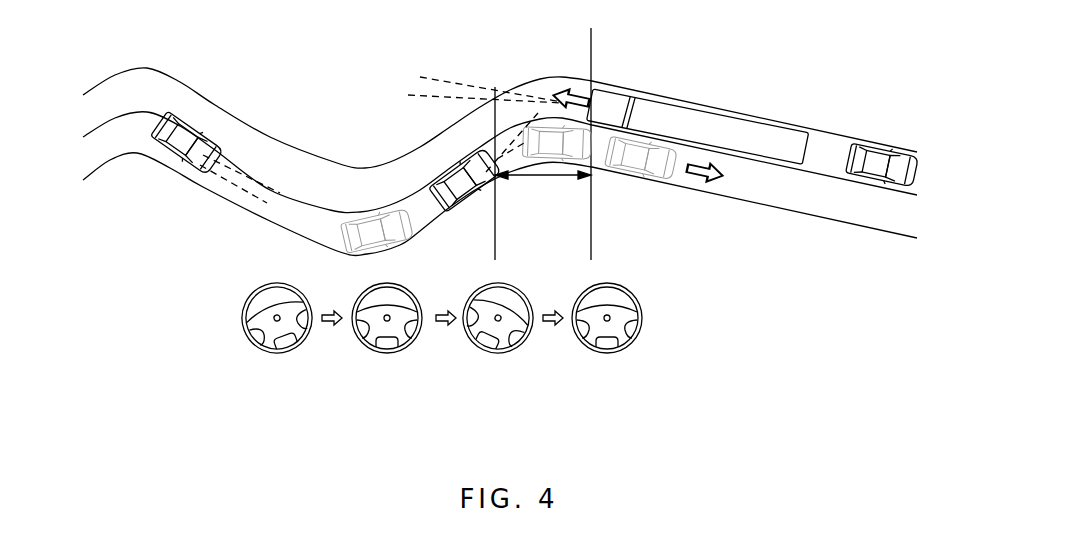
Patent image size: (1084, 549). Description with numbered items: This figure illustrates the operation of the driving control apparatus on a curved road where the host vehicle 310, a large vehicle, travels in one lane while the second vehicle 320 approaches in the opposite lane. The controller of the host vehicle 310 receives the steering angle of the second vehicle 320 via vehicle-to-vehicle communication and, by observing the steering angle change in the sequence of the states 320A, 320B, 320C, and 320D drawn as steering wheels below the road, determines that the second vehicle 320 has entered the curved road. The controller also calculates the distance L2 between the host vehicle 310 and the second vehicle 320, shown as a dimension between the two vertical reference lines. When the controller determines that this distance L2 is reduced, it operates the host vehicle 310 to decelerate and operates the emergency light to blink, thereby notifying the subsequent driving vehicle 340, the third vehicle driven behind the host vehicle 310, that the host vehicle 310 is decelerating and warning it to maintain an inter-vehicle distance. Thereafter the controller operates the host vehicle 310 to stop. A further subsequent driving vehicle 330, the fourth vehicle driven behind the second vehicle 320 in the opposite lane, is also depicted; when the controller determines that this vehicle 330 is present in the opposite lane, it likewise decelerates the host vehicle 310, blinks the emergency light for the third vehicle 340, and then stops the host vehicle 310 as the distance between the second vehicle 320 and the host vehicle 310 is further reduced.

The host vehicle 310 is at (715, 125).
The second vehicle 320 is at (458, 197).
The steering angle change of the second vehicle (first state) 320A is at (277, 353).
The steering angle change of the second vehicle (second state) 320B is at (387, 353).
The steering angle change of the second vehicle (third state) 320C is at (498, 353).
The steering angle change of the second vehicle (fourth state) 320D is at (607, 353).
The subsequent driving vehicle in the opposite lane 330 is at (187, 160).
The subsequent driving vehicle of the host vehicle 340 is at (888, 160).
The distance between the host vehicle and the second vehicle L2 is at (543, 177).